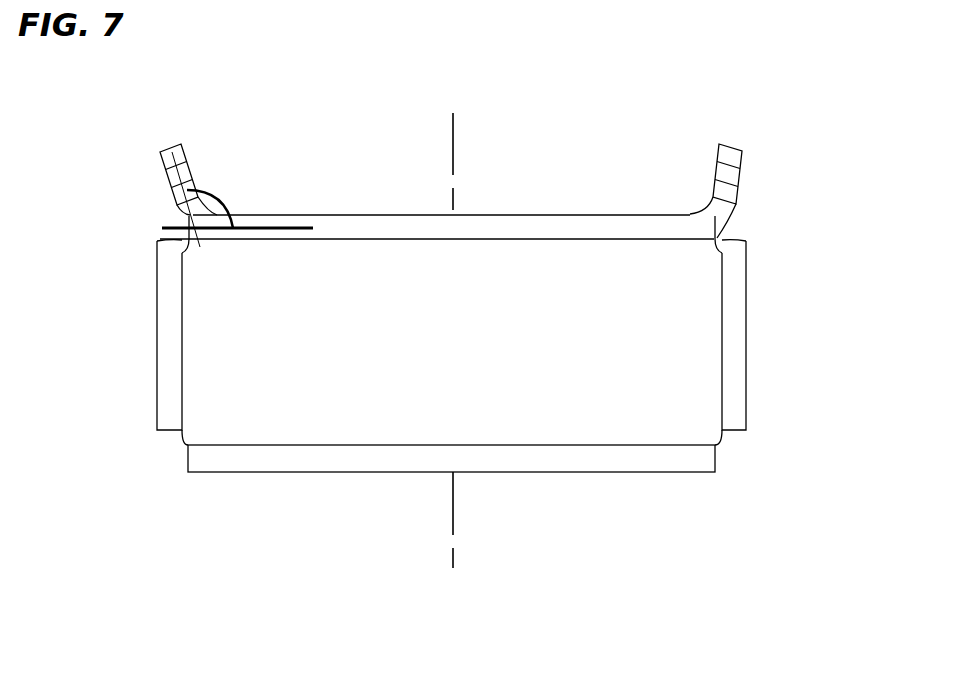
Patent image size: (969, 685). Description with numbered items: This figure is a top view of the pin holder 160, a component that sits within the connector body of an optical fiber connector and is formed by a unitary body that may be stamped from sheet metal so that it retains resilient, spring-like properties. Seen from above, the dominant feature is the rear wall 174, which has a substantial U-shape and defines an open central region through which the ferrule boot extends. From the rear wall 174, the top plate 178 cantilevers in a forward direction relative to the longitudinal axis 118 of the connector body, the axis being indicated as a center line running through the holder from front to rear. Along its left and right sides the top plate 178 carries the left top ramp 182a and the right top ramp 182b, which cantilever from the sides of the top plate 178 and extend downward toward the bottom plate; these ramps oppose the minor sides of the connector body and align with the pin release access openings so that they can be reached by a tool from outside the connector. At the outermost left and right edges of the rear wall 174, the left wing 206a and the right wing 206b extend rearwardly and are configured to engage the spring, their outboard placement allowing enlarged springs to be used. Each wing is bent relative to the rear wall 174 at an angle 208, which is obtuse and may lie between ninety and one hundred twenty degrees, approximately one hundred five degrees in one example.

The pin holder 160 is at (782, 150).
The rear wall 174 is at (383, 214).
The top plate 178 is at (533, 290).
The left top ramp 182a is at (157, 318).
The right top ramp 182b is at (746, 330).
The left wing 206a is at (162, 150).
The right wing 206b is at (720, 150).
The angle 208 is at (213, 192).
The longitudinal axis 118 is at (452, 512).